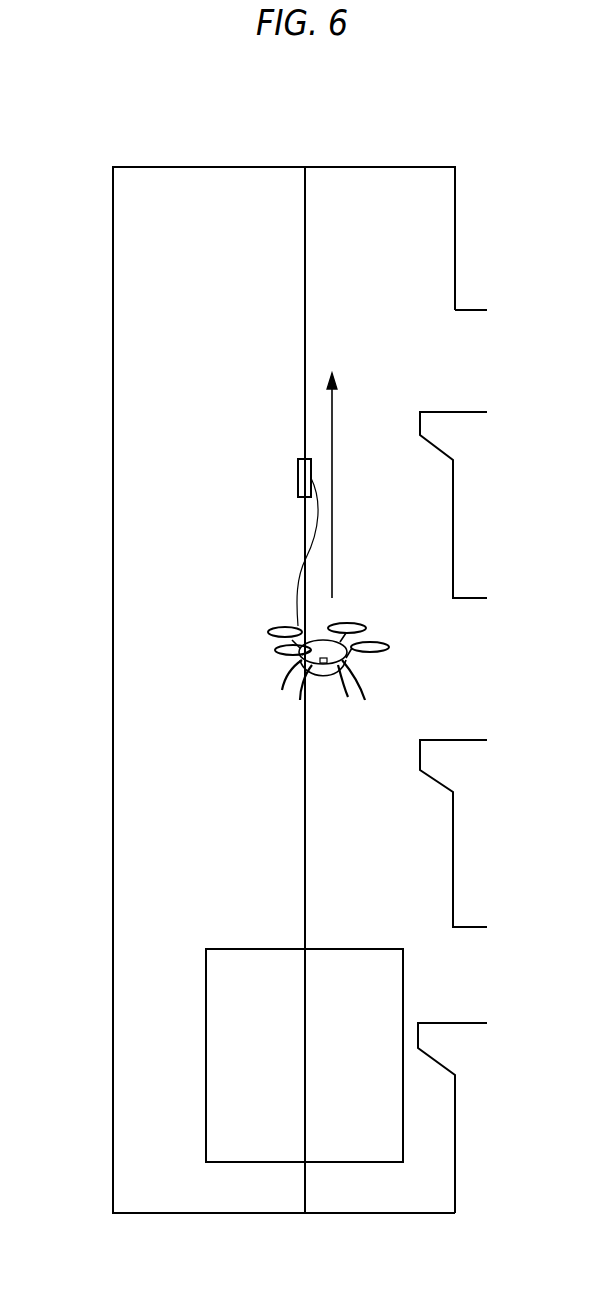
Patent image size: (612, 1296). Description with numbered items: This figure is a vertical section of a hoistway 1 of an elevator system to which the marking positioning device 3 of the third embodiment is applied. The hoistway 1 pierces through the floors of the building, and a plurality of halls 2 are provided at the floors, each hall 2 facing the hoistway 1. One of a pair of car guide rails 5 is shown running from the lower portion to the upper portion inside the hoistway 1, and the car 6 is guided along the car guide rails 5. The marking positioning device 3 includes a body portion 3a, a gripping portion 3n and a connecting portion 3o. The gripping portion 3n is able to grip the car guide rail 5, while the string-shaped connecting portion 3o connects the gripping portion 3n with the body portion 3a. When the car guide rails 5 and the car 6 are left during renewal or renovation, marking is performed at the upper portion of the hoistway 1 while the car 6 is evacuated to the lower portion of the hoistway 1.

The hoistway 1 is at (382, 167).
The hall 2 is at (473, 412).
The marking positioning device 3 is at (214, 719).
The body portion 3a is at (280, 652).
The gripping portion 3n is at (298, 472).
The connecting portion 3o is at (313, 528).
The car guide rail 5 is at (304, 330).
The car 6 is at (206, 1041).